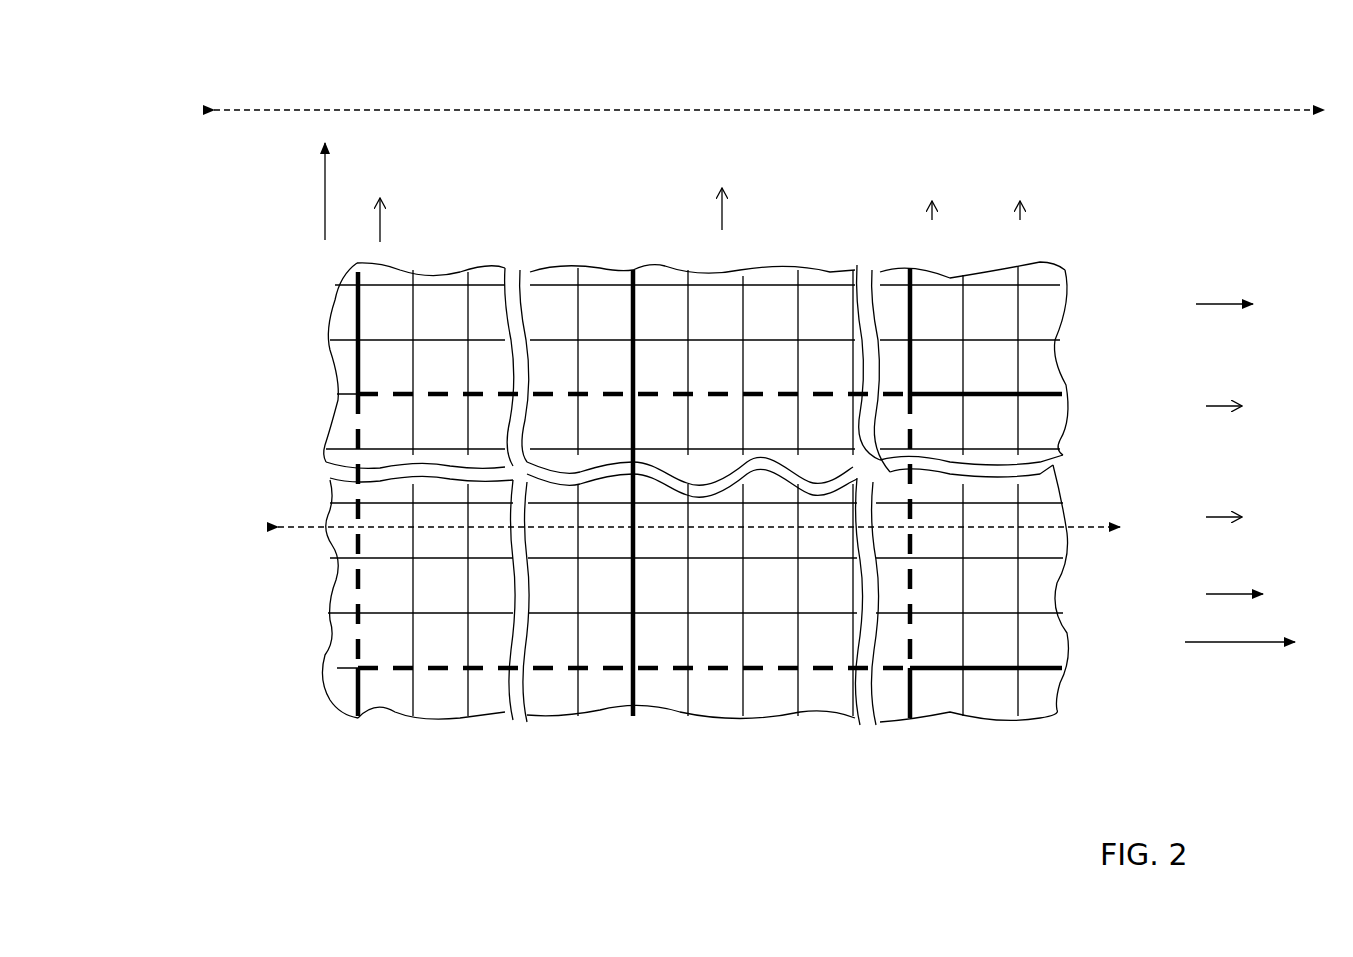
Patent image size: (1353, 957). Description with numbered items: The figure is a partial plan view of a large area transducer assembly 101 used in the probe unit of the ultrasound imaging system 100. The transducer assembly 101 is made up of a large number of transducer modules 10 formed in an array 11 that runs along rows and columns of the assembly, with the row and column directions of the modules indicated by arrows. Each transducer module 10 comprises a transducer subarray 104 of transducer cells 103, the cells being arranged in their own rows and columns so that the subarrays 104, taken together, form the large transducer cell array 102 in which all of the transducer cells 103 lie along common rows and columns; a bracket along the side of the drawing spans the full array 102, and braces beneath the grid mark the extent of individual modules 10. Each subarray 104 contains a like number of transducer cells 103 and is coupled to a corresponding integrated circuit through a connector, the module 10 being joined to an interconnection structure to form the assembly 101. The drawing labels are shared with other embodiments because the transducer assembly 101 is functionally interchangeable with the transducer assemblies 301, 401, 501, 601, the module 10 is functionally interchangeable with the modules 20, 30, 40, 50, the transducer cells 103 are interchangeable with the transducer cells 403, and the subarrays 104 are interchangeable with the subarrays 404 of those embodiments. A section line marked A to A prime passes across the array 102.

The ultrasound imaging system 100 is at (738, 462).
The transducer assembly 101 is at (769, 76).
The transducer assembly 301 is at (769, 76).
The transducer assembly 401 is at (769, 76).
The transducer assembly 501 is at (769, 76).
The transducer assembly 601 is at (953, 110).
The transducer cell array 102 is at (236, 725).
The array of transducer modules 11 is at (292, 366).
The transducer cell 103 is at (703, 525).
The transducer cell 403 is at (1043, 316).
The transducer subarray 104 is at (609, 724).
The transducer subarray 404 is at (480, 670).
The transducer module 10 is at (633, 847).
The transducer module 20 is at (633, 847).
The transducer module 30 is at (633, 847).
The transducer module 40 is at (633, 847).
The transducer module 50 is at (633, 847).